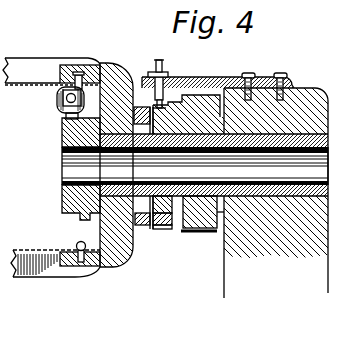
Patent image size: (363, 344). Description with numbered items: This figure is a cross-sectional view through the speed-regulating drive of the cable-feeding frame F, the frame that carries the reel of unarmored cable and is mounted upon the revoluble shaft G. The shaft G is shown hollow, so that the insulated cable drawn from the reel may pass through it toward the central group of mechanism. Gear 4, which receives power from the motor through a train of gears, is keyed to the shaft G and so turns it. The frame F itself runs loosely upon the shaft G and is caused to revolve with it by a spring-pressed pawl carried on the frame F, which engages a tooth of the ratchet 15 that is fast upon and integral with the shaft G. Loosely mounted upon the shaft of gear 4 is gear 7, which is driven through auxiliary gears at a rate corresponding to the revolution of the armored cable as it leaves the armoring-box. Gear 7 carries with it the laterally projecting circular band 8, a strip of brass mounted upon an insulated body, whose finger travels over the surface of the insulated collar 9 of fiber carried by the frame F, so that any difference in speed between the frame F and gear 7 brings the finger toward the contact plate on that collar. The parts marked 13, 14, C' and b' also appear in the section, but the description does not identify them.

The gear 4 is at (200, 232).
The gear 7 is at (159, 229).
The circular band 8 is at (143, 226).
The insulated collar 9 is at (139, 230).
The set bolt 13 is at (168, 77).
The clamp block 14 is at (62, 133).
The ratchet 15 is at (88, 218).
The shaft G is at (62, 200).
The frame F is at (41, 268).
The nut C' is at (56, 100).
The bolt b' is at (51, 102).